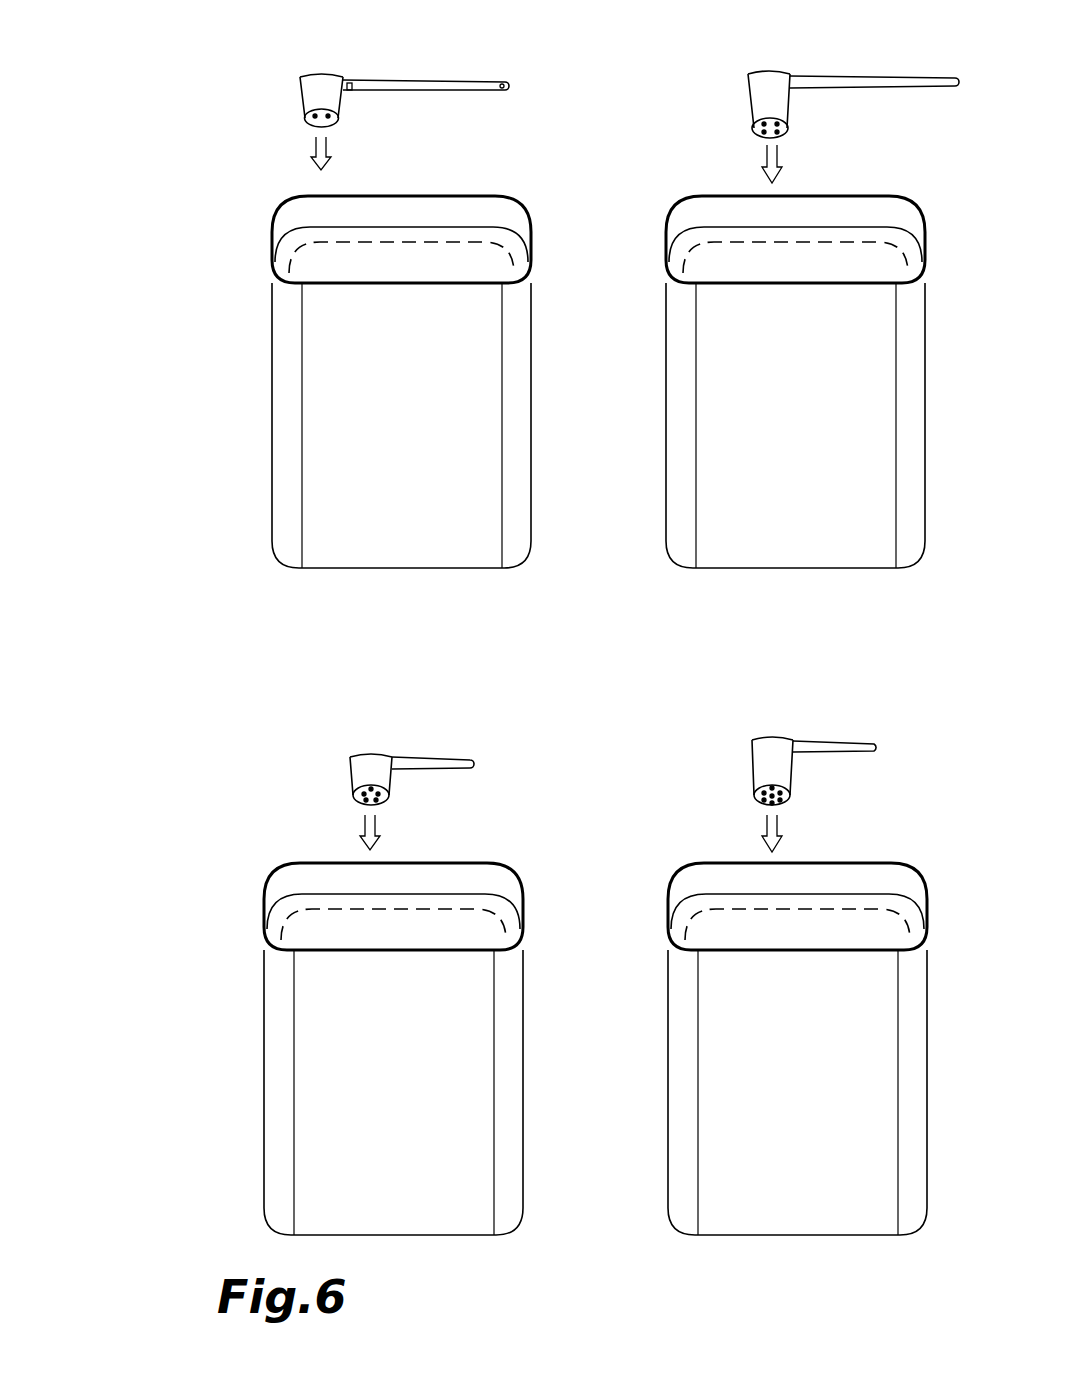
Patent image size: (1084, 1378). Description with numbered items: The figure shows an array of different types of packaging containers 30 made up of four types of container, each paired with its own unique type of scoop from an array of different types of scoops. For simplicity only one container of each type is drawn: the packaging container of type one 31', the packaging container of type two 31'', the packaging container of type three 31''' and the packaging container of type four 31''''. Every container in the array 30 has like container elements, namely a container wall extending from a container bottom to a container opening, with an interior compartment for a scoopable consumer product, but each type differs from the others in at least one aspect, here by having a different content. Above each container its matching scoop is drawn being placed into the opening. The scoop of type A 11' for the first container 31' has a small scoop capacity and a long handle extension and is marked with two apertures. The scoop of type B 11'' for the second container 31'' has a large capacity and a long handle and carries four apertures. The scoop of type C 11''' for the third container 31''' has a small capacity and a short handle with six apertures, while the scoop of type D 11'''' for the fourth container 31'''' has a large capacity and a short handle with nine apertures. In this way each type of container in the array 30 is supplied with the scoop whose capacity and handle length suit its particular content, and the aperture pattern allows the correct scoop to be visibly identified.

The array of different types of packaging containers 30 is at (170, 573).
The scoop of type A 11' is at (356, 65).
The scoop of type B 11'' is at (810, 84).
The scoop of type C 11''' is at (367, 754).
The scoop of type D 11'''' is at (768, 746).
The packaging container of type one 31' is at (371, 349).
The packaging container of type two 31'' is at (758, 348).
The packaging container of type three 31''' is at (362, 1018).
The packaging container of type four 31'''' is at (766, 1018).